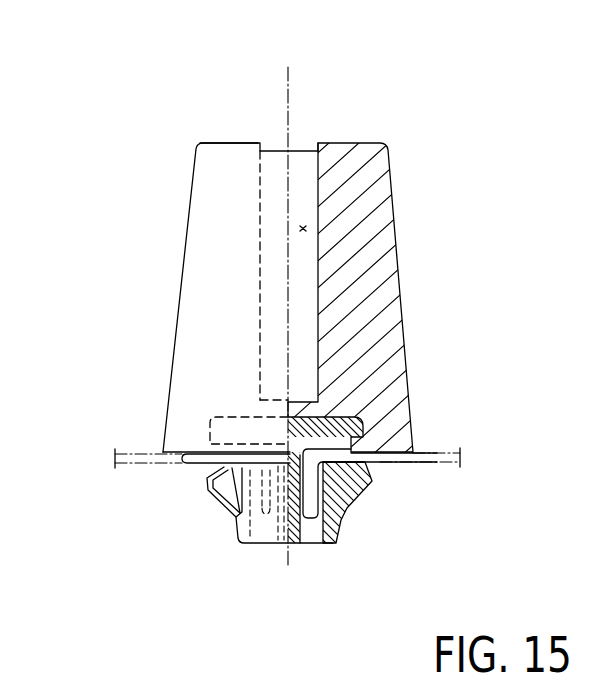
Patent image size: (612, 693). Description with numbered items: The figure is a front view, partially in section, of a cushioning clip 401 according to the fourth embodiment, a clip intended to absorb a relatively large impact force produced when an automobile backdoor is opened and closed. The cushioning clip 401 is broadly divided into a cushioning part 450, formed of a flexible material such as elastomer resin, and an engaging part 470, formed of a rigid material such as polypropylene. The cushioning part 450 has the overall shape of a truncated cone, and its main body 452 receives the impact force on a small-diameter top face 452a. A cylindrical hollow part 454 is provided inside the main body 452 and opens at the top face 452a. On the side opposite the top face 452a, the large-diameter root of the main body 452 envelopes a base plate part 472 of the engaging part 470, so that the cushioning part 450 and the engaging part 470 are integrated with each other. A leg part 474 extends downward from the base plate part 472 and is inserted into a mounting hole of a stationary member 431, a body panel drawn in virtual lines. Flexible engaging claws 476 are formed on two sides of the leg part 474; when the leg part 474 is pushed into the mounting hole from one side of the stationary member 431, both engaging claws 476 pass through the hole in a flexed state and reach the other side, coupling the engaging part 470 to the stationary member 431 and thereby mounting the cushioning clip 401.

The cushioning clip 401 is at (412, 290).
The stationary member 431 is at (425, 452).
The cushioning part 450 is at (142, 238).
The main body 452 is at (377, 318).
The top face 452a is at (233, 140).
The hollow part 454 is at (303, 228).
The engaging part 470 is at (283, 509).
The base plate part 472 is at (218, 420).
The leg part 474 is at (255, 523).
The engaging claws 476 is at (210, 488).